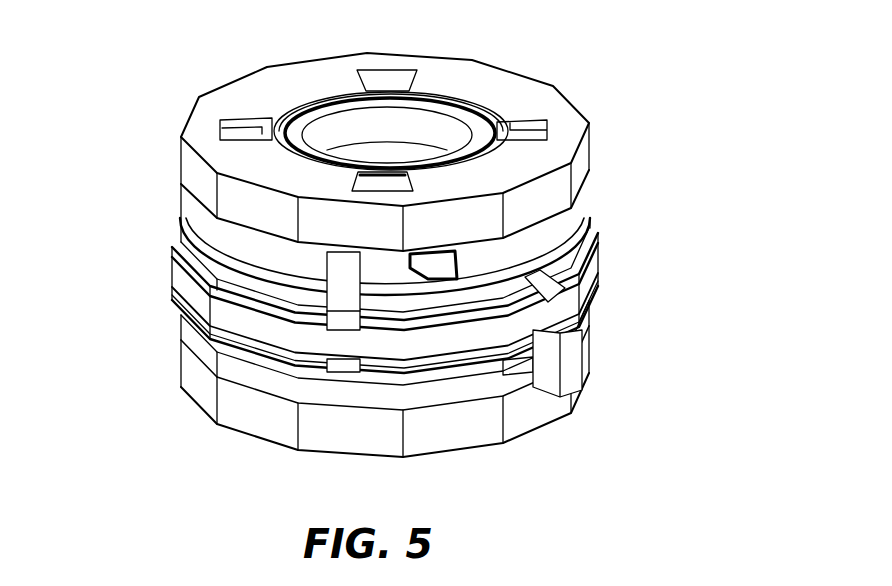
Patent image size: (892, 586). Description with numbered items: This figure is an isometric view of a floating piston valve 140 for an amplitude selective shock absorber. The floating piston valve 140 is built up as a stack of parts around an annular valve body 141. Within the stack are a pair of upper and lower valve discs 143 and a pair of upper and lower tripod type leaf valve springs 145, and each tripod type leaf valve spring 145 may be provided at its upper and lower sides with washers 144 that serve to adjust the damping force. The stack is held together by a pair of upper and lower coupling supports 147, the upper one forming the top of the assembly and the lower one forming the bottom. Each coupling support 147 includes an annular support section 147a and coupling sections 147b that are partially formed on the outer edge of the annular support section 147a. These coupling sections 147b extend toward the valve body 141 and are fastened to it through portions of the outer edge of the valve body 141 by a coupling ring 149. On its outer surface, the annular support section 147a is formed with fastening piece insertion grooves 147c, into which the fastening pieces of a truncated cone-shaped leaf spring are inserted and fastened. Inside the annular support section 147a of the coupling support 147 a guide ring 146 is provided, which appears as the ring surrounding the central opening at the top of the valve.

The floating piston valve 140 is at (685, 119).
The annular valve body 141 is at (172, 234).
The upper and lower valve discs 143 is at (447, 262).
The washers 144 is at (477, 370).
The tripod type leaf valve spring 145 is at (580, 273).
The guide ring 146 is at (331, 123).
The coupling support 147 is at (188, 123).
The annular support section 147a is at (182, 163).
The coupling sections 147b is at (340, 301).
The fastening piece insertion grooves 147c is at (488, 120).
The coupling ring 149 is at (335, 325).